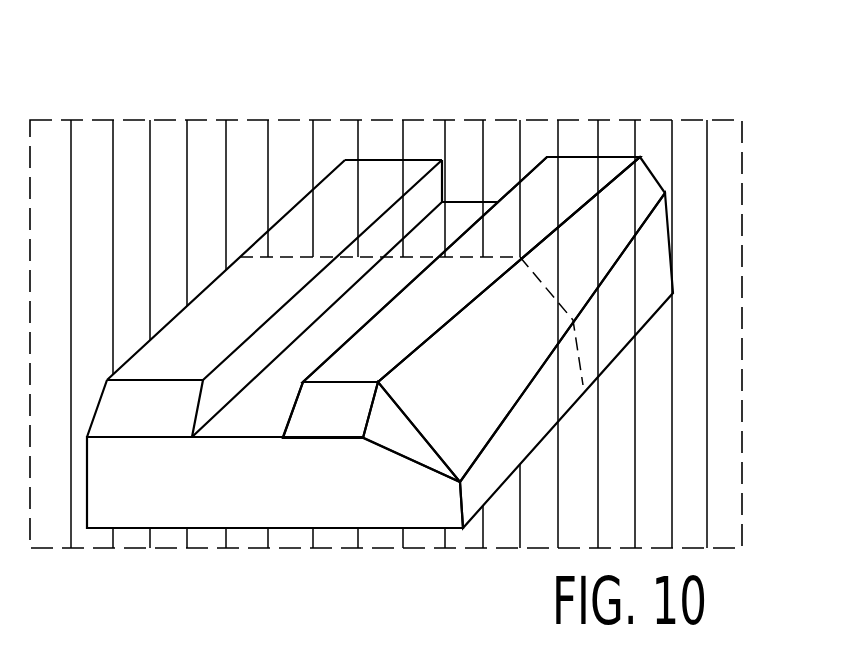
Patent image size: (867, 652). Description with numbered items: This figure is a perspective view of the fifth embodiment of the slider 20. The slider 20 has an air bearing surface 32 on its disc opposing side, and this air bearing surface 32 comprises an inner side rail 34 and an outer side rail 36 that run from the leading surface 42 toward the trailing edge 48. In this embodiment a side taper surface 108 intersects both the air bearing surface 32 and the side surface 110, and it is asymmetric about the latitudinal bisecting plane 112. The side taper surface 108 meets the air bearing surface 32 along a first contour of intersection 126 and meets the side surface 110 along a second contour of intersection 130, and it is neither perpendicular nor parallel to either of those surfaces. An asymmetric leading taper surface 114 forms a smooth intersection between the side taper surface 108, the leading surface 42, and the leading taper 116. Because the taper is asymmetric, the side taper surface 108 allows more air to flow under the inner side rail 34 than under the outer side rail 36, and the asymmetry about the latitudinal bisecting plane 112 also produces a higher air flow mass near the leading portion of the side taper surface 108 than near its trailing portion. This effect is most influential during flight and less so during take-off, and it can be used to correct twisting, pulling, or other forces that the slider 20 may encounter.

The slider 20 is at (485, 93).
The air bearing surface 32 is at (577, 188).
The inner side rail 34 is at (544, 172).
The outer side rail 36 is at (318, 185).
The leading surface 42 is at (240, 498).
The trailing edge 48 is at (377, 158).
The side taper surface 108 is at (484, 402).
The side surface 110 is at (657, 256).
The latitudinal bisecting plane 112 is at (733, 135).
The asymmetric leading taper surface 114 is at (402, 440).
The leading taper 116 is at (330, 410).
The intersection 126 is at (438, 332).
The intersection 130 is at (560, 343).